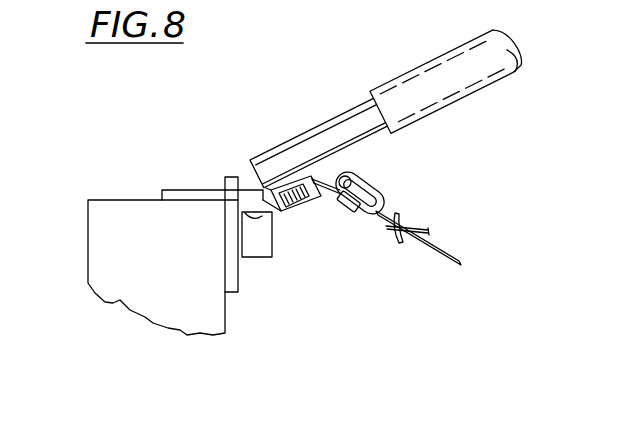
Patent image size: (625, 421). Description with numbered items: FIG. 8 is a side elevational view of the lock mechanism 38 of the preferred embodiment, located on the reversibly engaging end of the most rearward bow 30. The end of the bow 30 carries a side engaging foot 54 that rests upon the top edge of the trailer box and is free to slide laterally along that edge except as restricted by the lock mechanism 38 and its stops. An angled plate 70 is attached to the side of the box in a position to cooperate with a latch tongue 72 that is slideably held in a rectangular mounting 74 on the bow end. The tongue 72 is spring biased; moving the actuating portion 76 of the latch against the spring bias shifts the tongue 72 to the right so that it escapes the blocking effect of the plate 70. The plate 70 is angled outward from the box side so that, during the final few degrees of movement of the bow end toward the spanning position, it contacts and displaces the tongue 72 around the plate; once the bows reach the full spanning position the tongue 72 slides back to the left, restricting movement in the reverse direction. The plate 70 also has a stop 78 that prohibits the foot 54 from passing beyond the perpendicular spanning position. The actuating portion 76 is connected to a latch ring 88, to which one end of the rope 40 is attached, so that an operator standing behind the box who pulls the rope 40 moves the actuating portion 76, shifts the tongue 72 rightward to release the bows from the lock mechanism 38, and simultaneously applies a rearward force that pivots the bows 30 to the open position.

The bow 30 is at (462, 75).
The lock mechanism 38 is at (99, 146).
The rope 40 is at (443, 252).
The side engaging foot 54 is at (187, 195).
The angled plate 70 is at (258, 252).
The latch tongue 72 is at (280, 212).
The rectangular mounting 74 is at (316, 180).
The actuating portion 76 is at (357, 182).
The stop 78 is at (231, 177).
The latch ring 88 is at (392, 230).